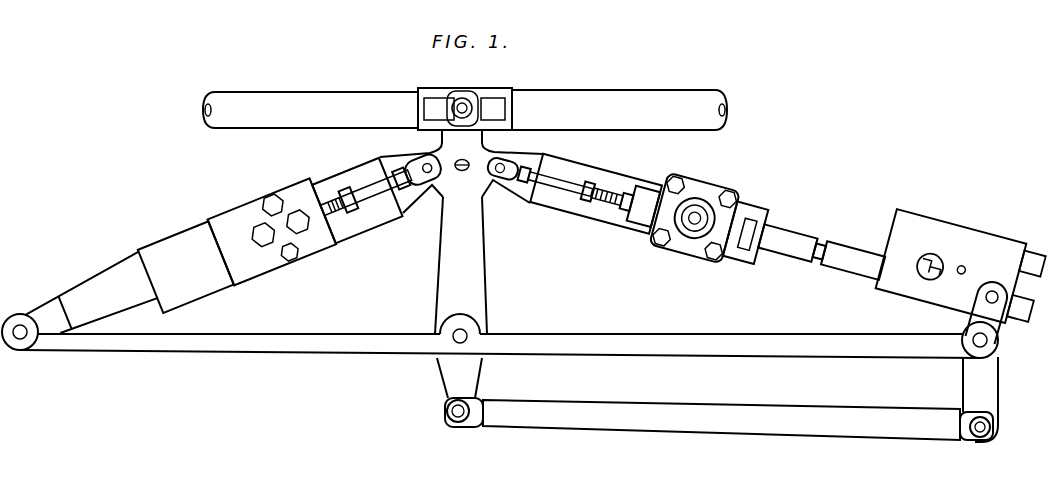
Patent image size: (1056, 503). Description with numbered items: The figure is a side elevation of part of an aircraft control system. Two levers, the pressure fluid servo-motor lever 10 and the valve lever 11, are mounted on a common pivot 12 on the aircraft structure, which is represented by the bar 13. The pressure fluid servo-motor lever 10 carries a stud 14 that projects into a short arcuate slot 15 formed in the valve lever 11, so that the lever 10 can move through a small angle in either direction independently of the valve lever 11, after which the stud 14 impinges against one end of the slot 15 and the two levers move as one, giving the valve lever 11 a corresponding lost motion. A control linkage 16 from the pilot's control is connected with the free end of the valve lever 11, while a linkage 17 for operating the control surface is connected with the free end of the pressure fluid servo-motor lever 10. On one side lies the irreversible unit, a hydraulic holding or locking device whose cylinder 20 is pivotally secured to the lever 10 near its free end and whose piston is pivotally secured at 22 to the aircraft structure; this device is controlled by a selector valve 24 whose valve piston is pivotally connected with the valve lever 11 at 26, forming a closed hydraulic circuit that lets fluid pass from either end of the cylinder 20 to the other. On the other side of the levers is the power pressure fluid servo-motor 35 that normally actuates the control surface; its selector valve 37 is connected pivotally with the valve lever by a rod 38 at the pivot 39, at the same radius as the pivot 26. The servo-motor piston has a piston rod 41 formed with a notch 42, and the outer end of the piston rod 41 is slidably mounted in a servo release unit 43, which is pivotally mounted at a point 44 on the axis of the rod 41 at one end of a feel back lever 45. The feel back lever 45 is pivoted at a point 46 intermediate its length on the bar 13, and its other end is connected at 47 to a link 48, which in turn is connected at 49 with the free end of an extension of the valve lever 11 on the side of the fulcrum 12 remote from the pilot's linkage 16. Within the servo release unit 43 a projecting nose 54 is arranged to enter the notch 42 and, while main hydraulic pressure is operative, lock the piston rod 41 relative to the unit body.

The pressure fluid servo-motor lever 10 is at (488, 268).
The valve lever 11 is at (468, 301).
The common pivot 12 is at (454, 340).
The bar 13 is at (262, 342).
The stud 14 is at (462, 171).
The arcuate slot 15 is at (485, 190).
The control linkage 16 is at (317, 110).
The linkage 17 is at (586, 110).
The cylinder 20 is at (172, 257).
The pivot 22 is at (25, 342).
The selector valve 24 is at (234, 221).
The pivot 26 is at (426, 173).
The power pressure fluid servo-motor 35 is at (613, 188).
The selector valve 37 is at (707, 194).
The rod 38 is at (580, 184).
The pivot 39 is at (502, 165).
The piston rod 41 is at (798, 243).
The notch 42 is at (931, 279).
The servo release unit 43 is at (961, 238).
The pivot point 44 is at (993, 292).
The feel back lever 45 is at (982, 392).
The pivot point 46 is at (988, 343).
The connection point 47 is at (977, 442).
The link 48 is at (695, 414).
The connection point 49 is at (455, 424).
The projecting nose 54 is at (930, 254).